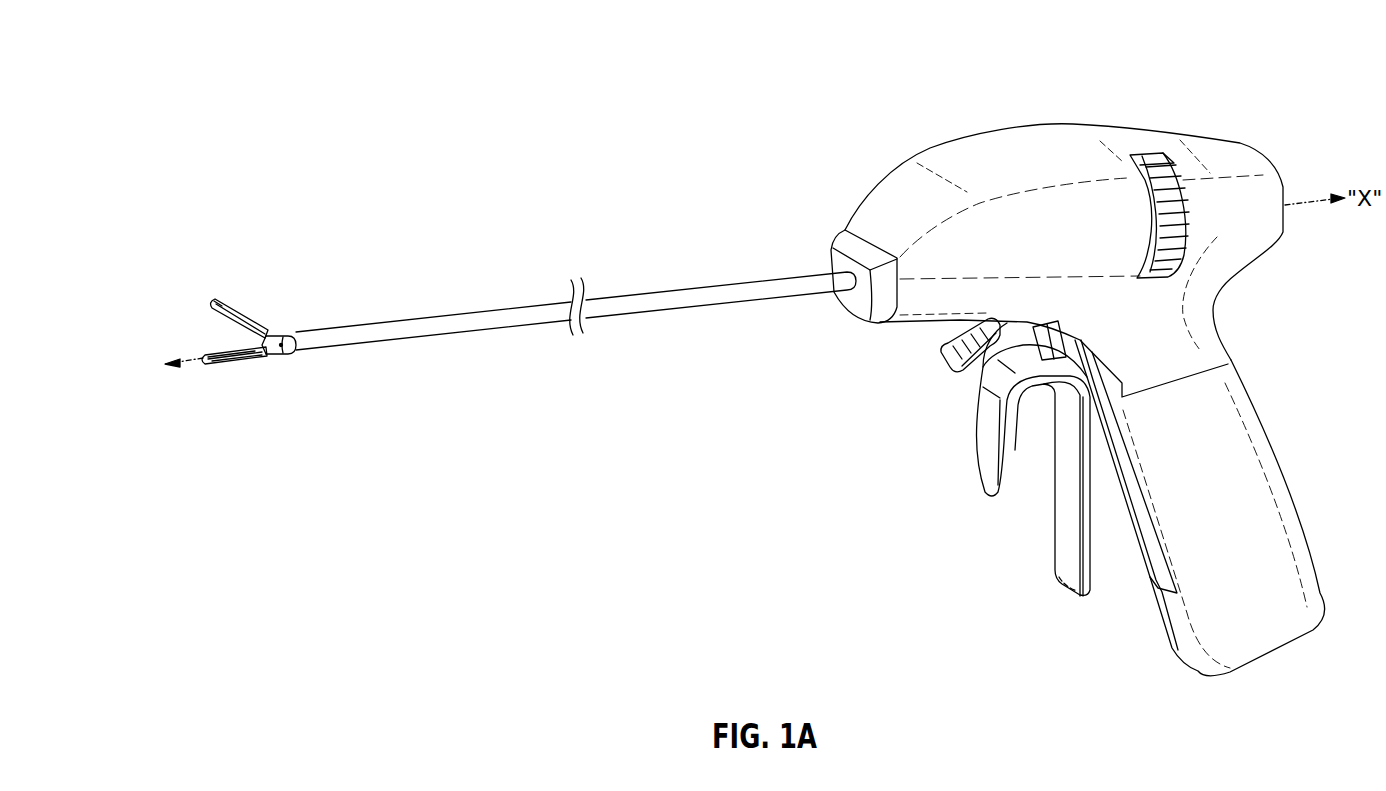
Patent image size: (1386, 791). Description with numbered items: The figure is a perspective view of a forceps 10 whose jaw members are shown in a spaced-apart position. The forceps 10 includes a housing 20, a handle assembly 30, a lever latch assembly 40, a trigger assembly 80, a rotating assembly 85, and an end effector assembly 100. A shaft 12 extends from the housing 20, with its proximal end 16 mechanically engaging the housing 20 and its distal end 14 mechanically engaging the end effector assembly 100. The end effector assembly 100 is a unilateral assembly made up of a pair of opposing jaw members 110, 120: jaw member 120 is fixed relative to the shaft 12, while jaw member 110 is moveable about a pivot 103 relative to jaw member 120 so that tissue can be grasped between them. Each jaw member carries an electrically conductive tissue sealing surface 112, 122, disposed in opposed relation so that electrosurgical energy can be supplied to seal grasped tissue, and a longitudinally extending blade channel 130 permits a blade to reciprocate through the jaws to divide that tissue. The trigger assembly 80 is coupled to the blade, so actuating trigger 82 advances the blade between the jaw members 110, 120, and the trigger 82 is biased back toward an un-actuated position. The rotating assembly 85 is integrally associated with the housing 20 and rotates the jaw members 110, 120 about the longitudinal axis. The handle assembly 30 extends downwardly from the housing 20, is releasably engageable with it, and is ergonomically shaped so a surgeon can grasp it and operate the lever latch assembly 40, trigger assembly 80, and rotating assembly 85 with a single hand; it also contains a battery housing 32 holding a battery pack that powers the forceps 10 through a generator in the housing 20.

The forceps 10 is at (867, 63).
The shaft 12 is at (482, 330).
The distal end 14 is at (312, 332).
The proximal end 16 is at (828, 270).
The housing 20 is at (1045, 150).
The handle assembly 30 is at (1275, 578).
The battery housing 32 is at (1258, 640).
The lever latch assembly 40 is at (975, 477).
The trigger assembly 80 is at (943, 360).
The trigger 82 is at (1030, 345).
The rotating assembly 85 is at (1160, 203).
The end effector assembly 100 is at (272, 403).
The pivot 103 is at (283, 353).
The jaw member 110 is at (238, 314).
The electrically conductive tissue sealing surface 112 is at (212, 302).
The jaw member 120 is at (221, 365).
The electrically conductive tissue sealing surface 122 is at (209, 352).
The blade channel 130 is at (229, 362).